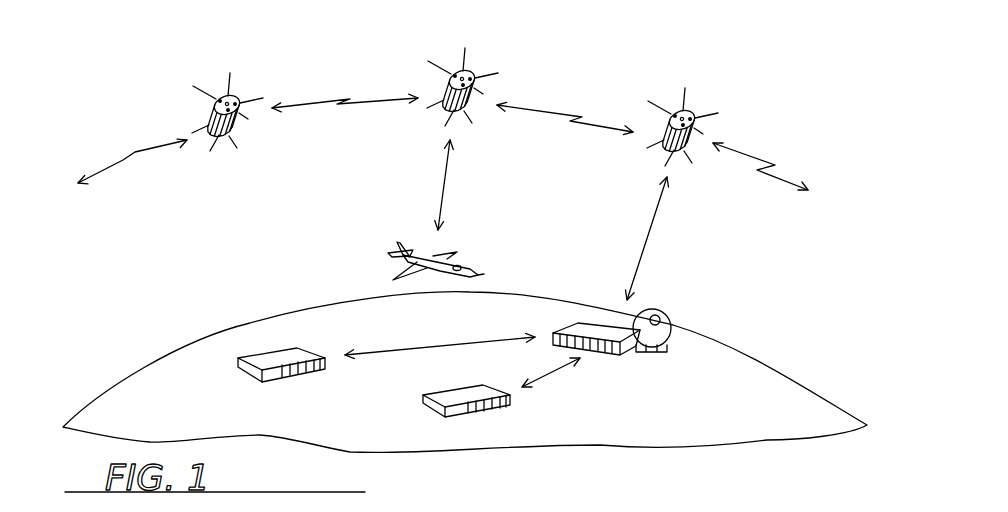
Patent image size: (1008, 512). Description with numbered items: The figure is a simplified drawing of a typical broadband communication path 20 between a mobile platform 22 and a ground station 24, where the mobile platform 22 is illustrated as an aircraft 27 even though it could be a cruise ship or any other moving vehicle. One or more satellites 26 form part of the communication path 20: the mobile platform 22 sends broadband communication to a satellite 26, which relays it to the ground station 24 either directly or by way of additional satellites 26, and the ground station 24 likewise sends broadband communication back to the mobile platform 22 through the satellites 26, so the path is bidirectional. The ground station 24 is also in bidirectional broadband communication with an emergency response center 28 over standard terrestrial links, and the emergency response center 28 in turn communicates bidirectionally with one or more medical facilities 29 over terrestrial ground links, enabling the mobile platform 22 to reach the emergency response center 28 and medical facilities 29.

The broadband communication path 20 is at (397, 212).
The mobile platform 22 is at (410, 262).
The ground station 24 is at (660, 328).
The satellite 26 is at (223, 138).
The aircraft 27 is at (477, 270).
The emergency response center 28 is at (612, 350).
The medical facility 29 is at (247, 370).